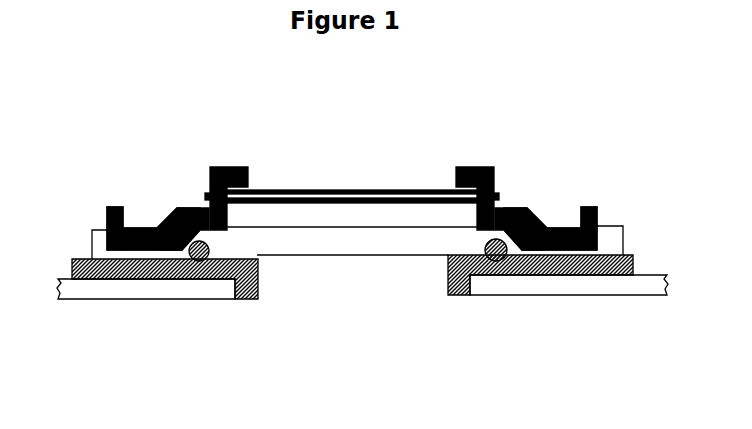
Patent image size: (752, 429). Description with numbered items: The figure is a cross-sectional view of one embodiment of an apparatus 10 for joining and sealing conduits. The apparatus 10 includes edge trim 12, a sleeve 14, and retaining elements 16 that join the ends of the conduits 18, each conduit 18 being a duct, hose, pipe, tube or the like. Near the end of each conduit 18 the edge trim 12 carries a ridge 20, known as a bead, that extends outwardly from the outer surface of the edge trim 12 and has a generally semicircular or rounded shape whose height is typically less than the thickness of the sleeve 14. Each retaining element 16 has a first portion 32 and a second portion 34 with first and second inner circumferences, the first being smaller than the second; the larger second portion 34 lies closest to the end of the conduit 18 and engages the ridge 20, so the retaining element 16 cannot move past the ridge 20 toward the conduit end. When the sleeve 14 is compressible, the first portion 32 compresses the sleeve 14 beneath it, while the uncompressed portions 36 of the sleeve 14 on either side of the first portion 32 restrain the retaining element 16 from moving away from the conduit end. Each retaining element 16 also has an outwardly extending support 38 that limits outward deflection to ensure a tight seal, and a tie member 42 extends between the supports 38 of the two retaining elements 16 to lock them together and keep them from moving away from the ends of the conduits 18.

The apparatus for joining and sealing conduits 10 is at (340, 138).
The edge trim 12 is at (256, 303).
The sleeve 14 is at (349, 245).
The retaining element 16 is at (200, 207).
The conduit 18 is at (524, 287).
The ridge 20 is at (432, 147).
The first portion 32 is at (136, 224).
The second portion 34 is at (181, 207).
The uncompressed portion 36 is at (90, 231).
The outwardly extending support 38 is at (104, 206).
The tie member 42 is at (402, 189).